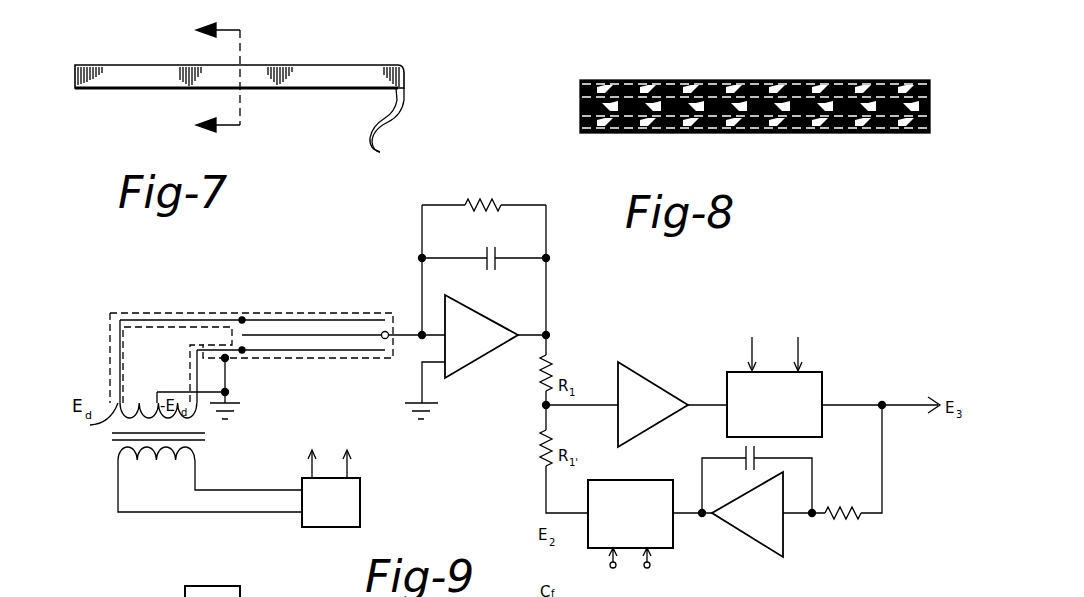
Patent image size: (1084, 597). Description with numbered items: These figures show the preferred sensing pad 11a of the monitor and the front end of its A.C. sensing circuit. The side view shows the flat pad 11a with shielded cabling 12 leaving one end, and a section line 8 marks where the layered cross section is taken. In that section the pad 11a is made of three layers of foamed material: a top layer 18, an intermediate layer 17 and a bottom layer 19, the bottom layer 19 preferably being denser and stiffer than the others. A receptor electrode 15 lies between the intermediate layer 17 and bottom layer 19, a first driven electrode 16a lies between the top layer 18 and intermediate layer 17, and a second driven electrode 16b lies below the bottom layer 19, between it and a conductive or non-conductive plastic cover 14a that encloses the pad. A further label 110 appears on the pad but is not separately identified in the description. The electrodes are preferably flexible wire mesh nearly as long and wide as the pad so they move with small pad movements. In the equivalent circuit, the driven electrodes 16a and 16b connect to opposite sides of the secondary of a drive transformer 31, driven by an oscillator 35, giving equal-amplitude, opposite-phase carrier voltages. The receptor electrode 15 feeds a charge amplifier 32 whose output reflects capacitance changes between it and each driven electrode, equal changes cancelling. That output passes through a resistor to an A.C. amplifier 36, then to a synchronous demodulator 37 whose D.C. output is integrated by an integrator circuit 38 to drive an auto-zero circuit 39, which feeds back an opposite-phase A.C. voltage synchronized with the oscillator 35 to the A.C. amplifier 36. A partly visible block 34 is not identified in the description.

In FIG. 7, the section line 8 is at (208, 79).
In FIG. 7, the pad 11a is at (300, 72).
In FIG. 7, the shielded cabling 12 is at (410, 113).
In FIG. 8, the plastic cover 14a is at (742, 106).
In FIG. 8, the receptor electrode 15 is at (668, 134).
In FIG. 9, the receptor electrode 15 is at (333, 335).
In FIG. 8, the first driven electrode 16a is at (632, 82).
In FIG. 9, the first driven electrode 16a is at (292, 320).
In FIG. 8, the second driven electrode 16b is at (630, 134).
In FIG. 9, the second driven electrode 16b is at (298, 352).
In FIG. 8, the intermediate layer 17 is at (932, 105).
In FIG. 8, the top layer 18 is at (895, 82).
In FIG. 8, the bottom layer 19 is at (895, 134).
In FIG. 8, the insulating shield 110 is at (835, 134).
In FIG. 9, the insulating shield 110 is at (362, 360).
In FIG. 9, the drive transformer 31 is at (205, 441).
In FIG. 9, the charge amplifier 32 is at (480, 357).
In FIG. 9, the circuit block 34 is at (210, 596).
In FIG. 9, the oscillator 35 is at (358, 490).
In FIG. 9, the A.C. amplifier 36 is at (635, 380).
In FIG. 9, the synchronous demodulator 37 is at (812, 378).
In FIG. 9, the integrator circuit 38 is at (770, 545).
In FIG. 9, the auto-zero circuit 39 is at (635, 483).